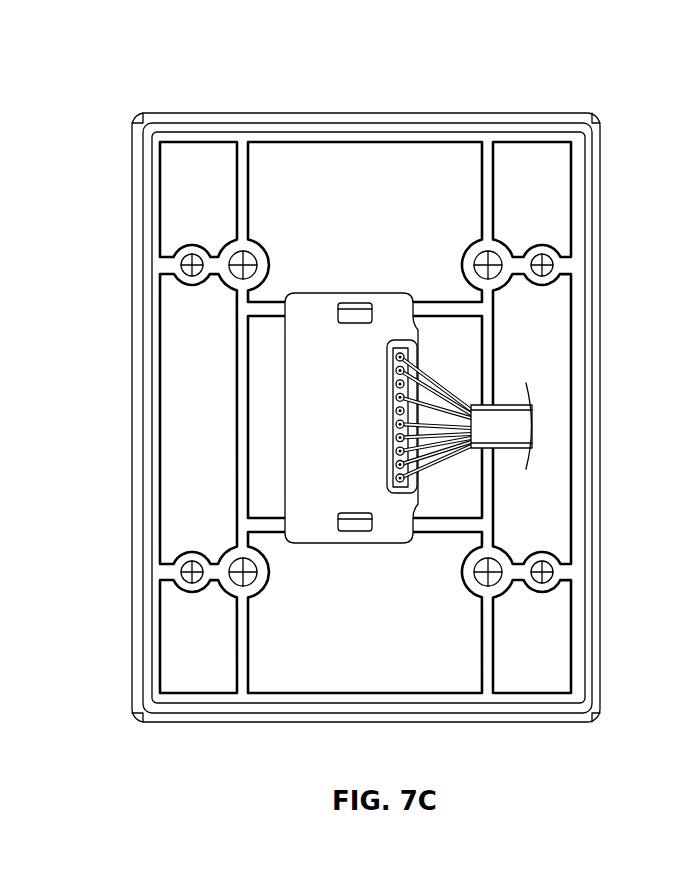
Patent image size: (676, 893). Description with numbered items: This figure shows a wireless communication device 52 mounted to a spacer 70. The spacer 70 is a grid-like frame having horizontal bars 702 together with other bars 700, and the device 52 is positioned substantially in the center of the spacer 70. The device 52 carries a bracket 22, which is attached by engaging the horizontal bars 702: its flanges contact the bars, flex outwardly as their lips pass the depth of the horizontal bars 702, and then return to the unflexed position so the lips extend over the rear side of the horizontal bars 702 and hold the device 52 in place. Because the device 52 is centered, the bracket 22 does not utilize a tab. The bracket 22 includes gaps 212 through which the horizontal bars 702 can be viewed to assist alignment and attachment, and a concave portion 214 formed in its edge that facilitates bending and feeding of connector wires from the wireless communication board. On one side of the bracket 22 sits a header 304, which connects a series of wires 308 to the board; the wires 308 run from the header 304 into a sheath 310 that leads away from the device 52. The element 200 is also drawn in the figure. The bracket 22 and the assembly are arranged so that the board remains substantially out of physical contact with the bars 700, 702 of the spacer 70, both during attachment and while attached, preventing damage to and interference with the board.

The spacer 70 is at (365, 373).
The bars 700 is at (329, 417).
The horizontal bars 702 is at (245, 312).
The wireless communication device 52 is at (259, 470).
The module 200 is at (365, 425).
The concave portion 214 is at (351, 418).
The gaps 212 is at (353, 303).
The bracket 22 is at (325, 506).
The header 304 is at (468, 422).
The wires 308 is at (433, 445).
The sheath 310 is at (513, 427).